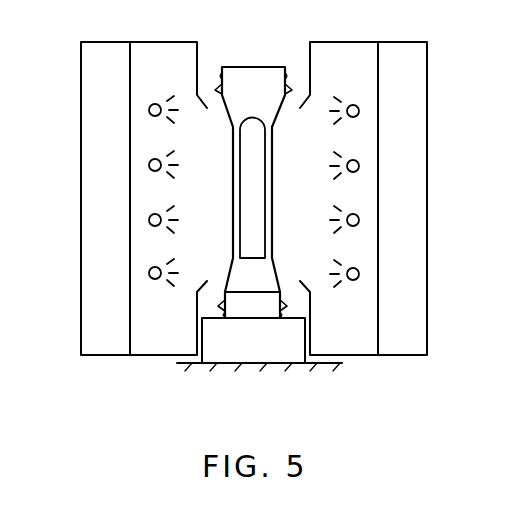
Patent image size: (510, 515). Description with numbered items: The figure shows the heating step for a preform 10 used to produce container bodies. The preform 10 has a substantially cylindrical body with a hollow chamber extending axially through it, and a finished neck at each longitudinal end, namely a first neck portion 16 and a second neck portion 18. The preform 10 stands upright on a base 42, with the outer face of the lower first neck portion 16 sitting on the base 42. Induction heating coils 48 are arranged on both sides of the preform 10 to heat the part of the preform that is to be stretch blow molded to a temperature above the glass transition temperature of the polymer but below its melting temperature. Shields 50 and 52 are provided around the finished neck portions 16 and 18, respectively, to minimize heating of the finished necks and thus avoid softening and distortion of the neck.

The preform 10 is at (272, 207).
The first neck portion 16 is at (220, 308).
The second neck portion 18 is at (285, 66).
The base 42 is at (233, 355).
The induction heating coils 48 is at (149, 219).
The shield 50 is at (312, 300).
The shield 52 is at (197, 72).